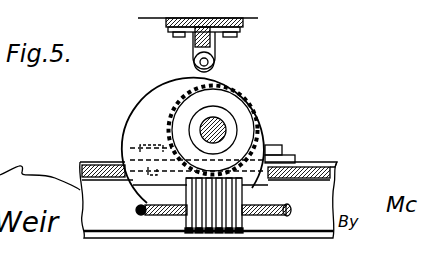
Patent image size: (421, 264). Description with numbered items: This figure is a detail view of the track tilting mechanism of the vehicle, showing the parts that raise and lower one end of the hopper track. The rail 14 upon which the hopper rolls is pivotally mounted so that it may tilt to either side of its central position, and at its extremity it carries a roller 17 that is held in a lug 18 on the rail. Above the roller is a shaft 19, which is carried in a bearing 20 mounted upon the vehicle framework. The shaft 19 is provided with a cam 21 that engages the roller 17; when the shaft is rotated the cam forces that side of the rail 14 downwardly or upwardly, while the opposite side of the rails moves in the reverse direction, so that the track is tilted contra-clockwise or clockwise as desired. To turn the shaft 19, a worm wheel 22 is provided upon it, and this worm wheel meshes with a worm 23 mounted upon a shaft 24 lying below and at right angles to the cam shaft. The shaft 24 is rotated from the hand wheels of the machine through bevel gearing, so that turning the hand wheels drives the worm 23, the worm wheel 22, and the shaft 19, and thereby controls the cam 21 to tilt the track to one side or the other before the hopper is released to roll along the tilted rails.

The rail 14 is at (197, 18).
The roller 17 is at (215, 63).
The lug 18 is at (214, 48).
The shaft 19 is at (222, 133).
The bearing 20 is at (283, 157).
The cam 21 is at (157, 101).
The worm wheel 22 is at (238, 107).
The worm 23 is at (138, 205).
The shaft 24 is at (278, 201).